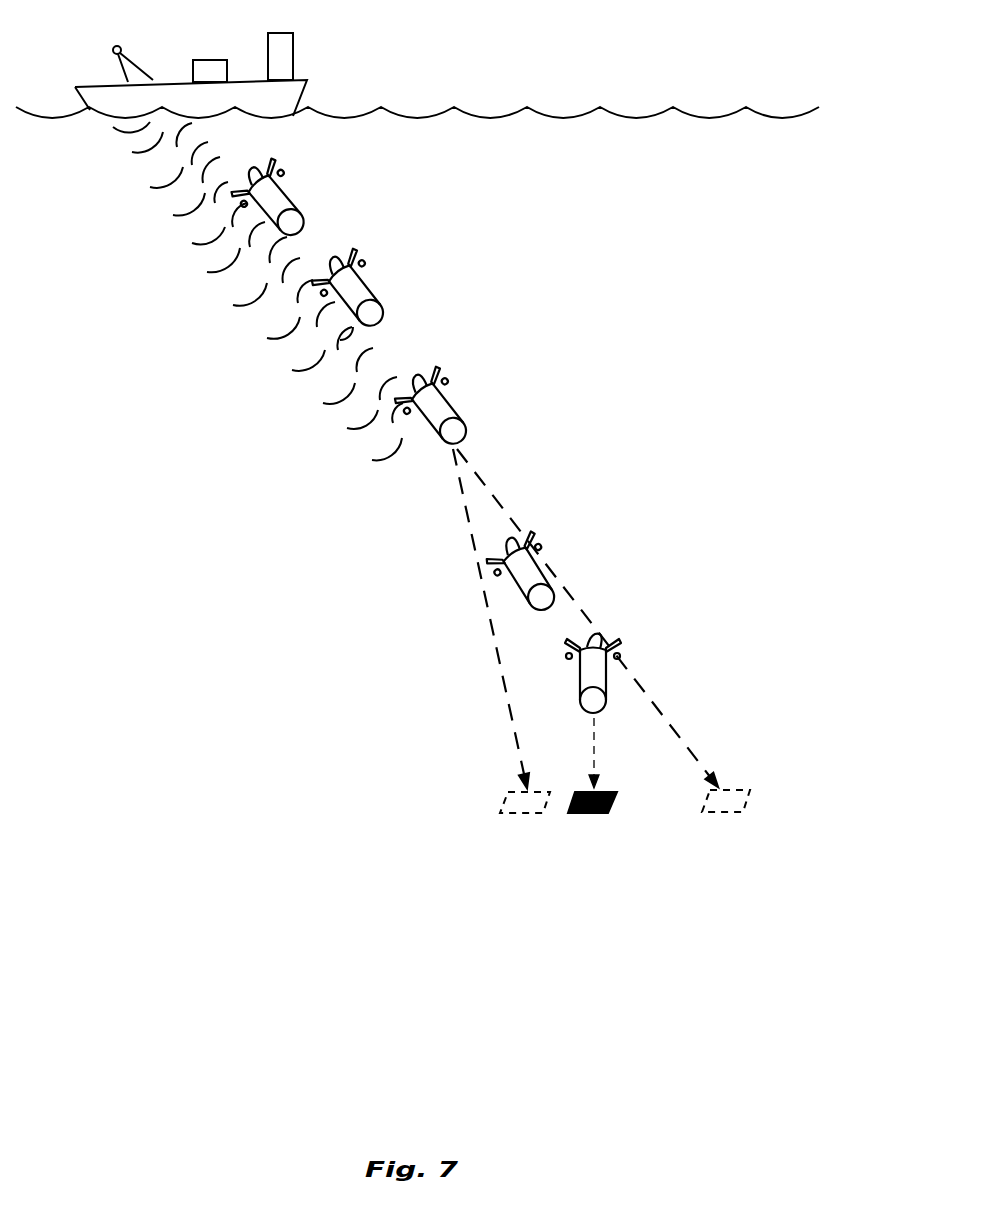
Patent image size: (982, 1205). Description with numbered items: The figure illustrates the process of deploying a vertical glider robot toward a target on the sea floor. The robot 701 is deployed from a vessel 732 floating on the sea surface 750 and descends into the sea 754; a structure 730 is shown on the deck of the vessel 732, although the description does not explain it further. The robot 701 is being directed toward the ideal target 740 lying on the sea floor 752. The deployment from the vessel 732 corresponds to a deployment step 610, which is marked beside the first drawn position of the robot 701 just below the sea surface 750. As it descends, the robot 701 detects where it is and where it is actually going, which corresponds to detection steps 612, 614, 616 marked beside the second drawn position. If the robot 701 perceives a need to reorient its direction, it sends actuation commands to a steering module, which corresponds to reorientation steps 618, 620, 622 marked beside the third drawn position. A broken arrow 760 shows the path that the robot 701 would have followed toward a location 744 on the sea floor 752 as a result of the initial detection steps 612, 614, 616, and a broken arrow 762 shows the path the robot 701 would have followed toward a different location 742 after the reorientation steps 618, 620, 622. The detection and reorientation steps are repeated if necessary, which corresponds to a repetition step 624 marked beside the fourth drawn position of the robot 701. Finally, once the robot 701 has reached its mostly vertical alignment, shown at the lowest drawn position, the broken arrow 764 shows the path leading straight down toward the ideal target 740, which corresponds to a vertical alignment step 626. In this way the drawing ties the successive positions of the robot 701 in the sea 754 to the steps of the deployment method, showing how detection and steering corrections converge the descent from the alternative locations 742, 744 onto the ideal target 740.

The control station on vessel 730 is at (217, 72).
The vessel 732 is at (167, 64).
The sea surface 750 is at (472, 112).
The sea 754 is at (710, 346).
The sea floor 752 is at (430, 805).
The deployment step 610 is at (423, 163).
The detection step 612 is at (485, 291).
The detection step 614 is at (353, 291).
The detection step 616 is at (353, 291).
The reorientation step 618 is at (585, 409).
The reorientation step 620 is at (463, 409).
The reorientation step 622 is at (463, 409).
The repetition step 624 is at (398, 543).
The vertical alignment step 626 is at (685, 658).
The robot 701 is at (450, 407).
The broken arrow 760 is at (615, 643).
The broken arrow 762 is at (513, 695).
The broken arrow 764 is at (595, 738).
The ideal target 740 is at (600, 815).
The location 742 is at (525, 815).
The location 744 is at (727, 813).